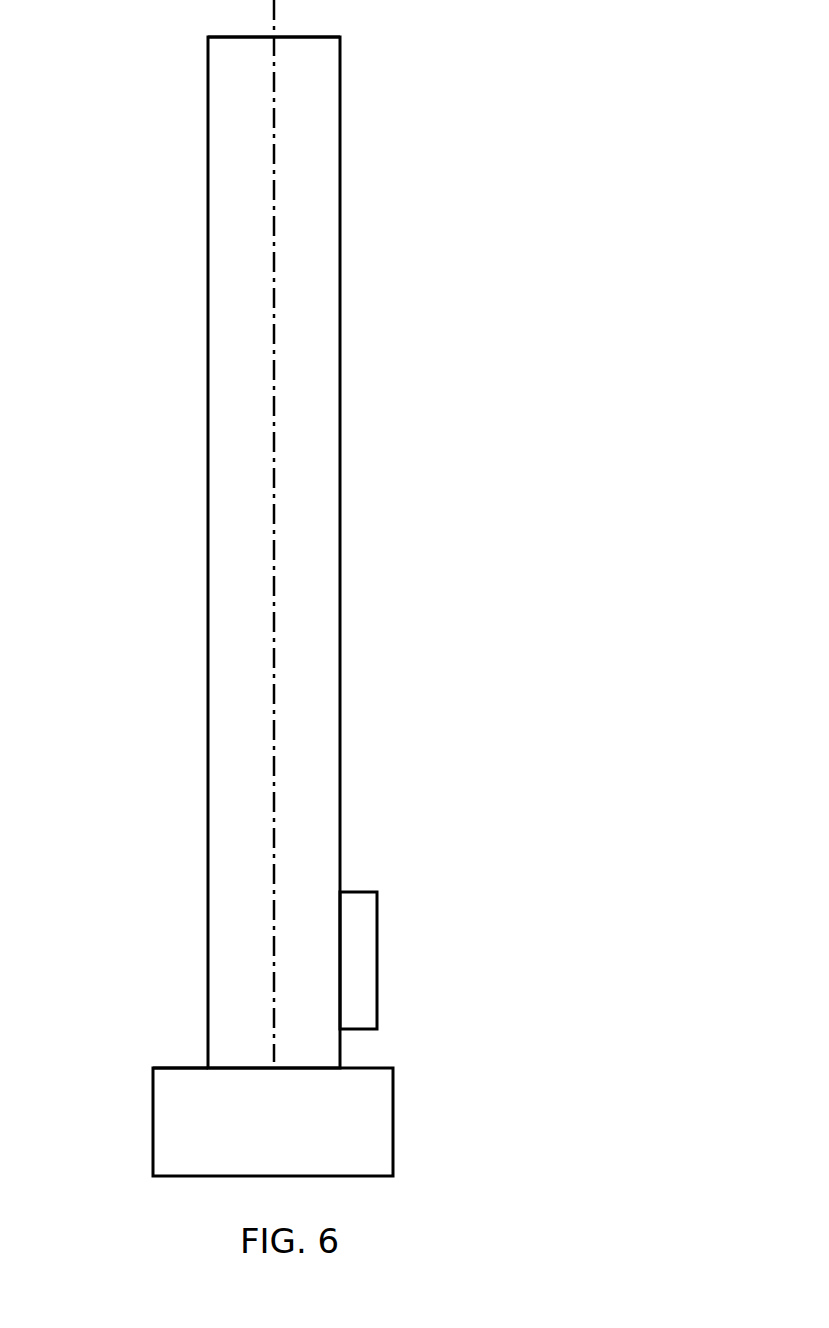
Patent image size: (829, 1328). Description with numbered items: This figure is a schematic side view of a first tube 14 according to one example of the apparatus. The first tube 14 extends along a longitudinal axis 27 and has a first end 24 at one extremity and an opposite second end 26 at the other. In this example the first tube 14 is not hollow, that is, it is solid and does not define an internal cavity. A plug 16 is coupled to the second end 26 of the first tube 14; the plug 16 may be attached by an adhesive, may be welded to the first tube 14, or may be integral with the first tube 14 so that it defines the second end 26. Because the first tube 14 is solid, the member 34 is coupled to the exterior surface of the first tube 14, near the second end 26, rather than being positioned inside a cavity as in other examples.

The first tube 14 is at (316, 197).
The plug 16 is at (273, 1122).
The first end 24 is at (155, 43).
The second end 26 is at (146, 1039).
The longitudinal axis 27 is at (274, 446).
The member 34 is at (362, 940).